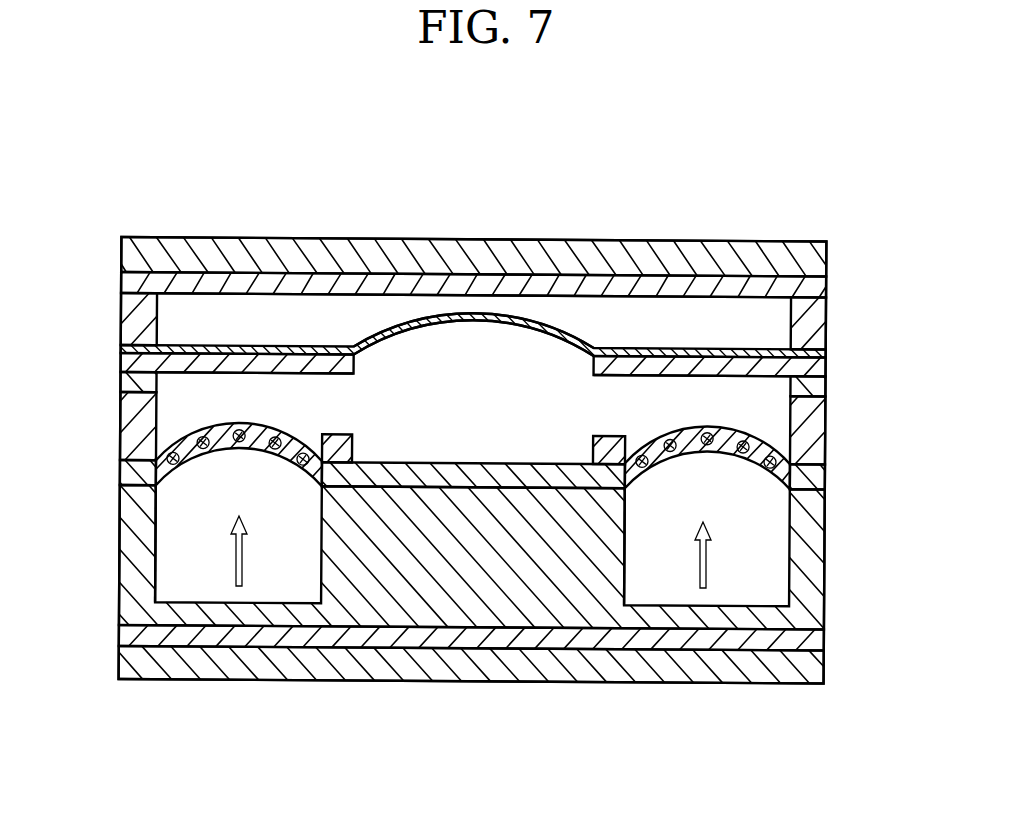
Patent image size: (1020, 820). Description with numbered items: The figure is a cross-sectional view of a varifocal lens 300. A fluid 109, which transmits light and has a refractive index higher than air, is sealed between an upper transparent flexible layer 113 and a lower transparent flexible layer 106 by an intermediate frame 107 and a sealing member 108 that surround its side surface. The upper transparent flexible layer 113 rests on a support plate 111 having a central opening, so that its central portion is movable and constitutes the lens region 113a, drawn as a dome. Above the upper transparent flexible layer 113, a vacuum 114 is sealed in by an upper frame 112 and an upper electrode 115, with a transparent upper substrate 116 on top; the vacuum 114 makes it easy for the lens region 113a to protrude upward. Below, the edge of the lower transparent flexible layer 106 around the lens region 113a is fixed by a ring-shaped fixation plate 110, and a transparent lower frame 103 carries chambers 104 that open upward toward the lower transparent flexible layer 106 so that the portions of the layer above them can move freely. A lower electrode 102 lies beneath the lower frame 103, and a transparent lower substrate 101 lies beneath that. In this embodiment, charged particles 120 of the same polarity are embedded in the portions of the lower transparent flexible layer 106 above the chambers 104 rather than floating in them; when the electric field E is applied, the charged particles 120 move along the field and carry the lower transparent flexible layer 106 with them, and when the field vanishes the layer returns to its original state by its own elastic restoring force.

The varifocal lens 300 is at (98, 227).
The transparent lower substrate 101 is at (820, 672).
The lower electrode 102 is at (820, 638).
The lower frame 103 is at (820, 598).
The chamber 104 is at (780, 558).
The lower transparent flexible layer 106 is at (823, 485).
The intermediate frame 107 is at (823, 447).
The sealing member 108 is at (823, 390).
The fluid 109 is at (168, 421).
The fixation plate 110 is at (332, 462).
The support plate 111 is at (823, 365).
The upper frame 112 is at (823, 327).
The upper transparent flexible layer 113 is at (241, 345).
The lens region 113a is at (475, 311).
The vacuum 114 is at (583, 318).
The upper electrode 115 is at (823, 290).
The transparent upper substrate 116 is at (823, 261).
The charged particles 120 is at (656, 460).